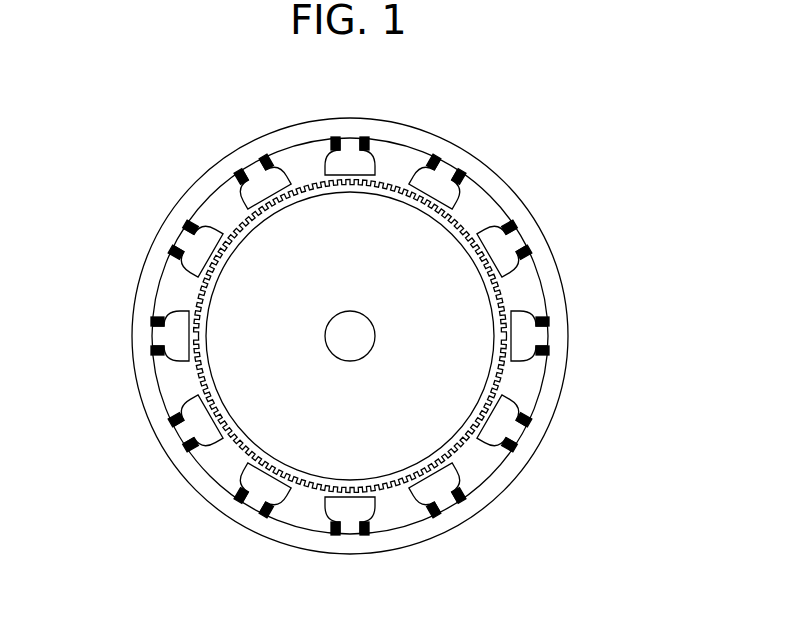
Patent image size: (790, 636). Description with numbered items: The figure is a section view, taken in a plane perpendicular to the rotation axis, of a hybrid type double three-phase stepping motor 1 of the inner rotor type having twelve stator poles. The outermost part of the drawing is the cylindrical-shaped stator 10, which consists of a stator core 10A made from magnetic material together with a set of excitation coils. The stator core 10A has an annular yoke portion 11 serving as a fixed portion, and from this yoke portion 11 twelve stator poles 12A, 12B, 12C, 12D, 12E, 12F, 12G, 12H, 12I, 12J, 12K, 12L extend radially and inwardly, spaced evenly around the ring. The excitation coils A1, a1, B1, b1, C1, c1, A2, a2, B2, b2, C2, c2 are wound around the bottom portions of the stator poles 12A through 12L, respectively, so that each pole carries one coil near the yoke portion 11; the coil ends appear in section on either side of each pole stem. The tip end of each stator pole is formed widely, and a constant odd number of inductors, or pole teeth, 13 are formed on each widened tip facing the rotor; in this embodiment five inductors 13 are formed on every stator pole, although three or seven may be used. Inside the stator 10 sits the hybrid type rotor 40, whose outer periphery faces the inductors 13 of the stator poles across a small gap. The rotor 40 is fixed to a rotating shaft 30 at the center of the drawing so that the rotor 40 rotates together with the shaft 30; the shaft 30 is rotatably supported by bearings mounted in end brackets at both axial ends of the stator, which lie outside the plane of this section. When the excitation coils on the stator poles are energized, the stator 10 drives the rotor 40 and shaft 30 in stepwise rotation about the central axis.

The hybrid type double three-phase stepping motor 1 is at (612, 260).
The stator 10 is at (577, 376).
The stator core 10A is at (498, 169).
The annular yoke portion 11 is at (262, 147).
The stator pole 12A is at (335, 122).
The stator pole 12B is at (455, 153).
The stator pole 12C is at (543, 224).
The stator pole 12D is at (577, 331).
The stator pole 12E is at (540, 440).
The stator pole 12F is at (465, 522).
The stator pole 12G is at (371, 552).
The stator pole 12H is at (241, 519).
The stator pole 12I is at (155, 444).
The stator pole 12J is at (120, 347).
The stator pole 12K is at (154, 246).
The stator pole 12L is at (234, 154).
The inductors (pole teeth) 13 is at (383, 174).
The rotating shaft 30 is at (356, 361).
The hybrid type rotor 40 is at (432, 300).
The excitation coil A1 is at (333, 146).
The excitation coil a1 is at (432, 160).
The excitation coil B1 is at (509, 225).
The excitation coil b1 is at (546, 321).
The excitation coil C1 is at (527, 417).
The excitation coil c1 is at (463, 492).
The excitation coil A2 is at (368, 531).
The excitation coil a2 is at (271, 515).
The excitation coil B2 is at (192, 447).
The excitation coil b2 is at (157, 355).
The excitation coil C2 is at (175, 255).
The excitation coil c2 is at (240, 175).